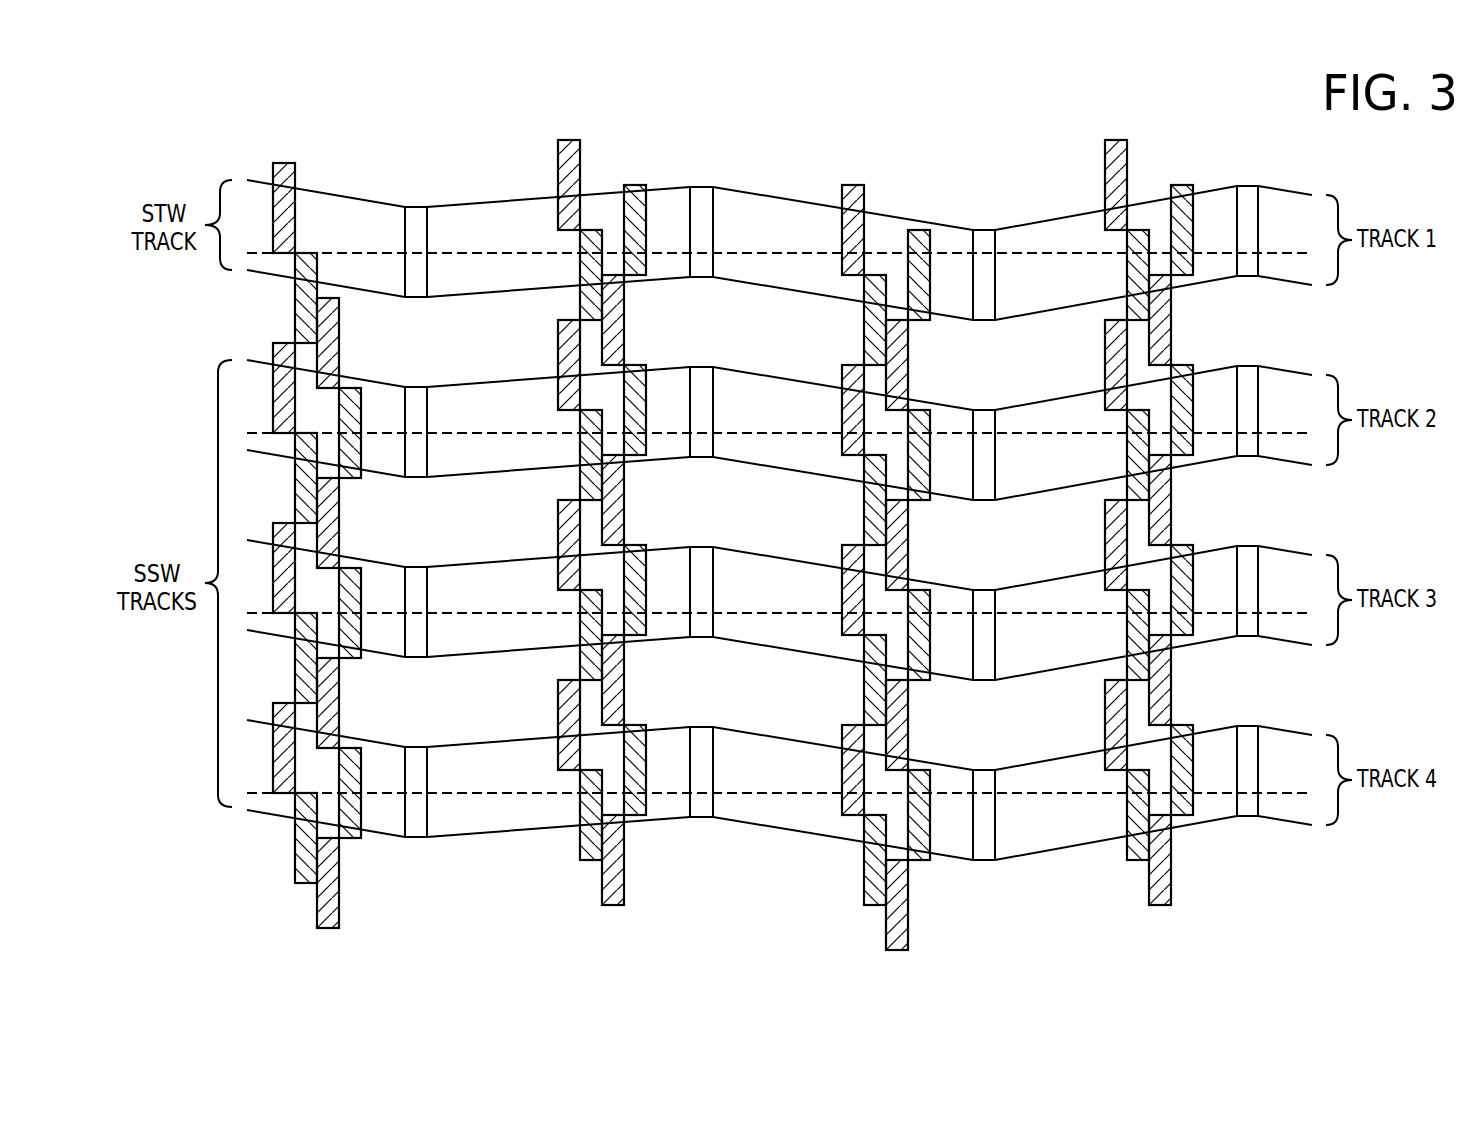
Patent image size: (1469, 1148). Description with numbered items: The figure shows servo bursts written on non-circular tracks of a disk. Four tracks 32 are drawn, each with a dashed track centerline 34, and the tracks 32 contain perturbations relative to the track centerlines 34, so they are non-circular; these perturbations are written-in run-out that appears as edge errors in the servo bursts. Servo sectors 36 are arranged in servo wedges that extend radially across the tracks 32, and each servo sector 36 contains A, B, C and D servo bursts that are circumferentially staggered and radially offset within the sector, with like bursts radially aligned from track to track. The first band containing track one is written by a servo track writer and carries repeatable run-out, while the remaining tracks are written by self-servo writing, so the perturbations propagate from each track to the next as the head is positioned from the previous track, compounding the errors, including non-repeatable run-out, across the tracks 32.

The tracks 32 is at (1283, 188).
The track centerlines 34 is at (1286, 253).
The servo sectors 36 is at (733, 510).
The A servo burst A is at (572, 140).
The B servo burst B is at (591, 230).
The C servo burst C is at (612, 275).
The D servo burst D is at (637, 185).